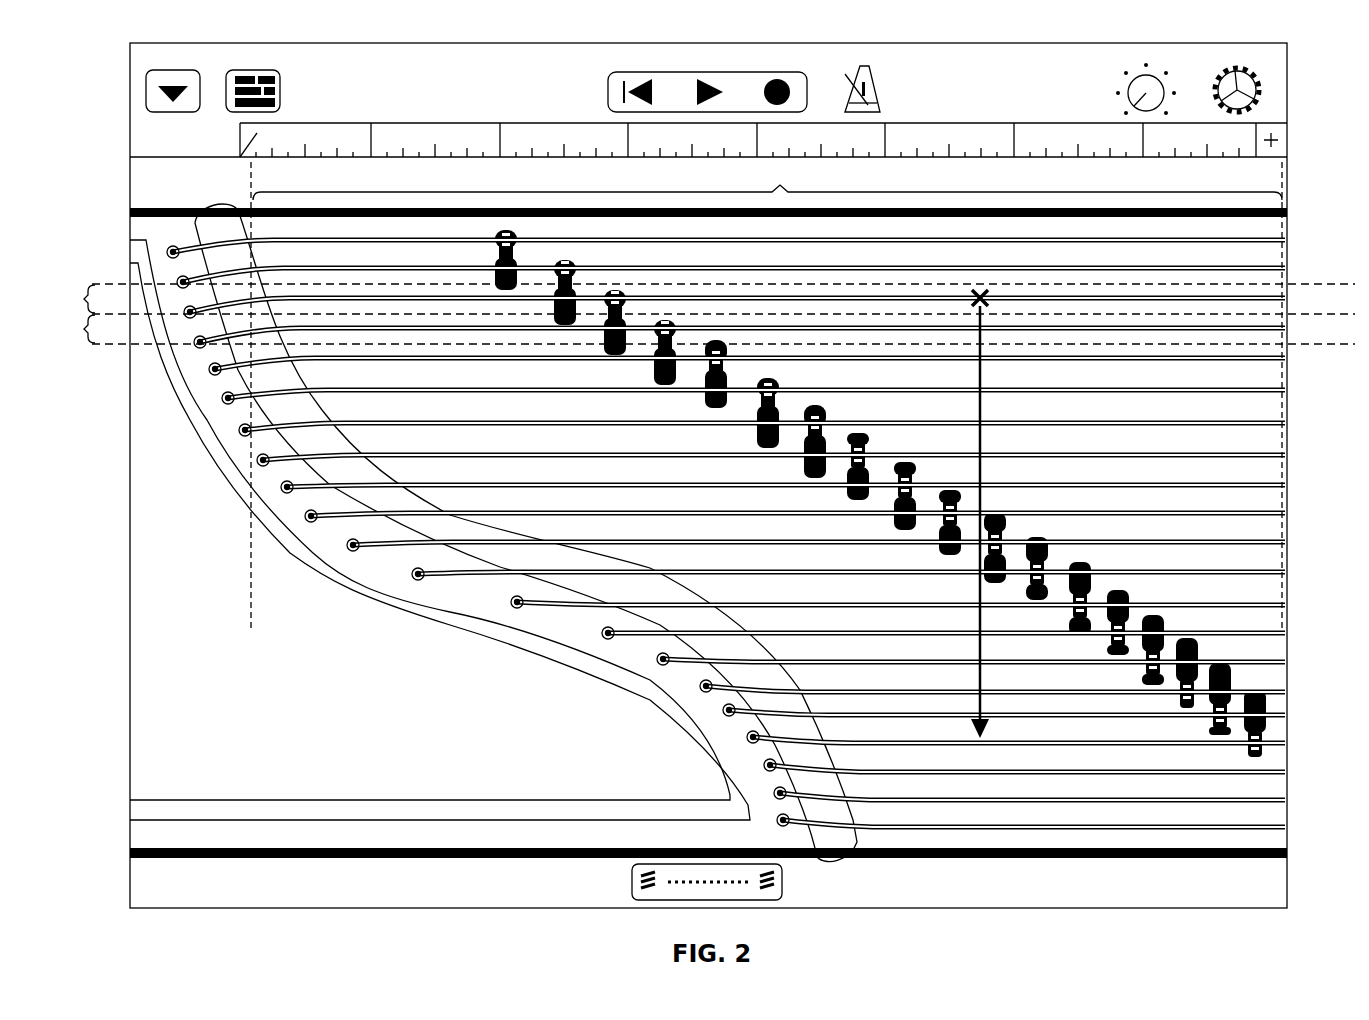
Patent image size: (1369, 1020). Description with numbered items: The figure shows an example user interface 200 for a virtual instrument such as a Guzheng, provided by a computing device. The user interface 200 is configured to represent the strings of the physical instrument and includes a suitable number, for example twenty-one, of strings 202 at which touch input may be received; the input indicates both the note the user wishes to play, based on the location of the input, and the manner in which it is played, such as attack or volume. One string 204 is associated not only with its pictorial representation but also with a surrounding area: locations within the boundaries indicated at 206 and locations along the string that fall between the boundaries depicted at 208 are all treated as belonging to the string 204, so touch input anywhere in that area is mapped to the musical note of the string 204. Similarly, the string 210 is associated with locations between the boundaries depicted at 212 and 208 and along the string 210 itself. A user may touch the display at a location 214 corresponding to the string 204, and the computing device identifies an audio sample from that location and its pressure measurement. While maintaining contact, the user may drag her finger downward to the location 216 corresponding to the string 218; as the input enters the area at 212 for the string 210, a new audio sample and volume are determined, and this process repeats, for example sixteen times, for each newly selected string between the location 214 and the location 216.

The user interface 200 is at (163, 929).
The strings 202 is at (1303, 225).
The string 204 is at (1160, 294).
The boundaries 206 is at (701, 299).
The boundaries 208 is at (766, 396).
The string 210 is at (1162, 333).
The boundaries 212 is at (701, 329).
The location 214 is at (1002, 286).
The location 216 is at (992, 733).
The string 218 is at (1066, 749).